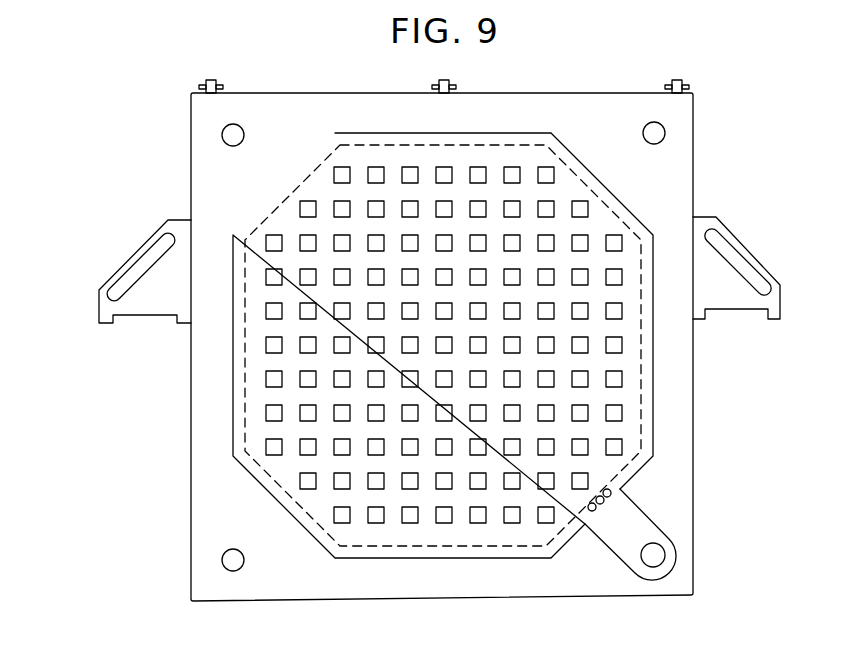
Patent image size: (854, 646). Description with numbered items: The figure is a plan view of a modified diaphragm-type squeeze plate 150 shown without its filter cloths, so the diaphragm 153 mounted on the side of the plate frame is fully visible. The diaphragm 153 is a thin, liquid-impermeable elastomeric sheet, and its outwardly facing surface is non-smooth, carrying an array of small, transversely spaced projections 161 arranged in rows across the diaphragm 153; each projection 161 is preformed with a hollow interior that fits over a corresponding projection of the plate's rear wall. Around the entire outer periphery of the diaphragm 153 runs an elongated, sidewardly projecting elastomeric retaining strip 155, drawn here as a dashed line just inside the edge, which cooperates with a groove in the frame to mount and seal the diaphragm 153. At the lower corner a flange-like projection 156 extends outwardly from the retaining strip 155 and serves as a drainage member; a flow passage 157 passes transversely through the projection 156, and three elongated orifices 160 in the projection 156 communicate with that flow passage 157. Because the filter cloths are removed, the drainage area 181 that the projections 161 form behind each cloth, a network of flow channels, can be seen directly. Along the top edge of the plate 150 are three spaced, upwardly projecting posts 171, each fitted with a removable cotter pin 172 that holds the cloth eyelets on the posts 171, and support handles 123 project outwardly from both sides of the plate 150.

The diaphragm-type squeeze plate 150 is at (124, 104).
The diaphragm 153 is at (654, 400).
The retaining strip 155 is at (243, 413).
The flange-like projection 156 is at (655, 522).
The flow passage 157 is at (650, 563).
The elongated orifices 160 is at (600, 516).
The projections 161 is at (616, 312).
The drainage area 181 is at (525, 193).
The posts 171 is at (210, 80).
The cotter pin 172 is at (199, 87).
The support handles 123 is at (142, 246).